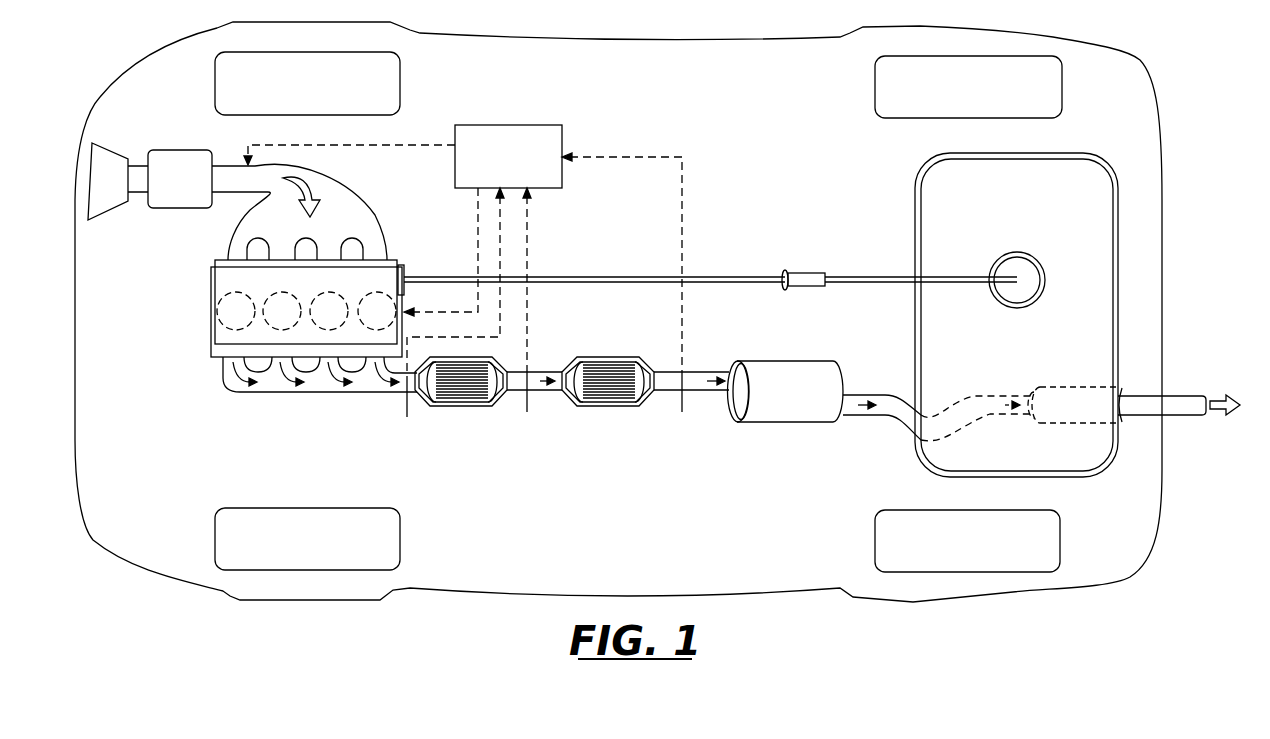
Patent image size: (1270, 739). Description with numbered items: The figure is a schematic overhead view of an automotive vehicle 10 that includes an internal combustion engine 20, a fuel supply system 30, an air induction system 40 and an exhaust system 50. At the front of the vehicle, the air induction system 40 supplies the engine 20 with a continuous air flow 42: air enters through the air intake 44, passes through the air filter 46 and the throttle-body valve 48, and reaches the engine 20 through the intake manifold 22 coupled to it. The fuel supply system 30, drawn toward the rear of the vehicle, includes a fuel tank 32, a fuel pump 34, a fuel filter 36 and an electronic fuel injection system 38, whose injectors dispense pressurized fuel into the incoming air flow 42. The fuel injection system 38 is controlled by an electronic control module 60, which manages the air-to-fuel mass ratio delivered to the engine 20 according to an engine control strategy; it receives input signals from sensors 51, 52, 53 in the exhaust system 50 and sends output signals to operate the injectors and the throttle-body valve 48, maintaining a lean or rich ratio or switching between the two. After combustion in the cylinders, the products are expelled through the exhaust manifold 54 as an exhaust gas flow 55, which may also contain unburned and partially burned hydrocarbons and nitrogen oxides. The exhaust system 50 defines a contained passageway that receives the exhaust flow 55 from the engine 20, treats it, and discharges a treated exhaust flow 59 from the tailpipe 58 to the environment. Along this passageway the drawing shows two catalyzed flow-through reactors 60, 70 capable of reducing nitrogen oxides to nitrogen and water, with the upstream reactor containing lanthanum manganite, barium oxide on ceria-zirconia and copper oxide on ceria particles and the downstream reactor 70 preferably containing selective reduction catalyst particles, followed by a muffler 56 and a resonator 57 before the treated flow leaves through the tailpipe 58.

The automotive vehicle 10 is at (1007, 33).
The internal combustion engine 20 is at (212, 340).
The intake manifold 22 is at (226, 240).
The fuel supply system 30 is at (732, 254).
The fuel tank 32 is at (1078, 153).
The fuel pump 34 is at (997, 263).
The fuel filter 36 is at (812, 272).
The electronic fuel injection system 38 is at (212, 288).
The air induction system 40 is at (163, 113).
The air flow 42 is at (322, 197).
The air intake 44 is at (92, 165).
The air filter 46 is at (153, 208).
The throttle-body valve 48 is at (250, 185).
The exhaust system 50 is at (727, 505).
The sensor 51 is at (414, 414).
The sensor 52 is at (534, 406).
The sensor 53 is at (684, 404).
The exhaust manifold 54 is at (228, 383).
The exhaust gas flow 55 is at (337, 376).
The muffler 56 is at (807, 423).
The resonator 57 is at (1062, 425).
The tailpipe 58 is at (1190, 397).
The treated exhaust flow 59 is at (1217, 415).
The electronic control module 60 is at (563, 137).
The downstream catalyzed flow-through reactor 70 is at (592, 408).